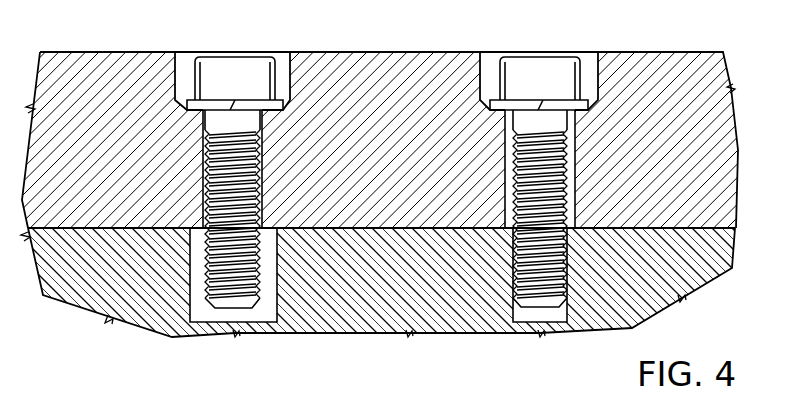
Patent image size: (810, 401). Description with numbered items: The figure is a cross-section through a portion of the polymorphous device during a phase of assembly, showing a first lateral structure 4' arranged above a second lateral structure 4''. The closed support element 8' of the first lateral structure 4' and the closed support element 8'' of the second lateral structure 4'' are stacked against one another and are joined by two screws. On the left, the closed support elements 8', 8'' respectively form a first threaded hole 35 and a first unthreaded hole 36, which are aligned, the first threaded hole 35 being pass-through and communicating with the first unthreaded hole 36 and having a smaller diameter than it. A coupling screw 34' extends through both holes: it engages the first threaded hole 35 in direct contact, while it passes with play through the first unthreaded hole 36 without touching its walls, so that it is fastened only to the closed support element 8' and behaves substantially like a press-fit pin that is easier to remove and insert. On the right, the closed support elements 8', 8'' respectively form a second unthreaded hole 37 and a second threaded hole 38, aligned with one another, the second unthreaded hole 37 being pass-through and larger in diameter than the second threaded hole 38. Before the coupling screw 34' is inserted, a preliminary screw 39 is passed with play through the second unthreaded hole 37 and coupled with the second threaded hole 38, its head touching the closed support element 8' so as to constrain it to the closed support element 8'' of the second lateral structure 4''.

The first lateral structure 4' is at (405, 120).
The second lateral structure 4'' is at (405, 282).
The closed support element 8' is at (405, 140).
The closed support element 8'' is at (405, 282).
The coupling screw 34' is at (235, 159).
The first threaded hole 35 is at (200, 146).
The first unthreaded hole 36 is at (267, 322).
The second unthreaded hole 37 is at (498, 146).
The second threaded hole 38 is at (525, 320).
The preliminary screw 39 is at (561, 70).